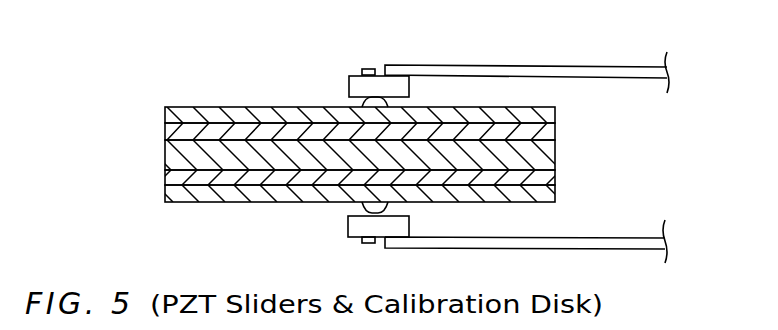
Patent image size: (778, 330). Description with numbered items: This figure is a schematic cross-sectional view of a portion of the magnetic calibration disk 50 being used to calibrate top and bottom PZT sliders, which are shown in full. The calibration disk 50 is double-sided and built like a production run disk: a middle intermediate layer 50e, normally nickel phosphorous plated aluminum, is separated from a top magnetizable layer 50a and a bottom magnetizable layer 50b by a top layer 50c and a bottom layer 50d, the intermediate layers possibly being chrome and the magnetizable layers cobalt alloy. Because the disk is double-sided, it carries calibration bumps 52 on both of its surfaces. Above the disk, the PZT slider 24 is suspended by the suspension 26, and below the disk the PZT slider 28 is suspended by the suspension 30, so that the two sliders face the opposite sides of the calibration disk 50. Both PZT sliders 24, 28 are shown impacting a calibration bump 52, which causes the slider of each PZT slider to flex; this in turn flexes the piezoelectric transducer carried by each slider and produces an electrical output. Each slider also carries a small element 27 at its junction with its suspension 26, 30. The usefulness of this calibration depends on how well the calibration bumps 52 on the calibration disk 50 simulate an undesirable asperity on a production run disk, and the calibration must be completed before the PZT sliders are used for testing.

The calibration disk 50 is at (316, 135).
The top magnetizable layer 50a is at (165, 114).
The bottom magnetizable layer 50b is at (165, 191).
The top layer 50c is at (165, 131).
The bottom layer 50d is at (165, 177).
The intermediate layer 50e is at (165, 155).
The PZT slider 24 is at (410, 86).
The suspension 26 is at (562, 66).
The electrical contact 27 is at (367, 69).
The PZT slider 28 is at (410, 226).
The suspension 30 is at (572, 237).
The calibration bump 52 is at (386, 103).